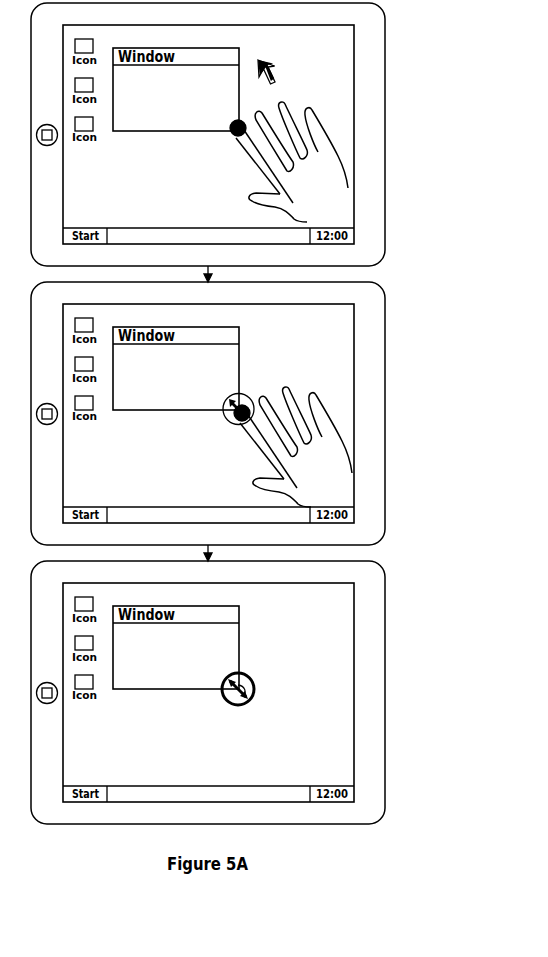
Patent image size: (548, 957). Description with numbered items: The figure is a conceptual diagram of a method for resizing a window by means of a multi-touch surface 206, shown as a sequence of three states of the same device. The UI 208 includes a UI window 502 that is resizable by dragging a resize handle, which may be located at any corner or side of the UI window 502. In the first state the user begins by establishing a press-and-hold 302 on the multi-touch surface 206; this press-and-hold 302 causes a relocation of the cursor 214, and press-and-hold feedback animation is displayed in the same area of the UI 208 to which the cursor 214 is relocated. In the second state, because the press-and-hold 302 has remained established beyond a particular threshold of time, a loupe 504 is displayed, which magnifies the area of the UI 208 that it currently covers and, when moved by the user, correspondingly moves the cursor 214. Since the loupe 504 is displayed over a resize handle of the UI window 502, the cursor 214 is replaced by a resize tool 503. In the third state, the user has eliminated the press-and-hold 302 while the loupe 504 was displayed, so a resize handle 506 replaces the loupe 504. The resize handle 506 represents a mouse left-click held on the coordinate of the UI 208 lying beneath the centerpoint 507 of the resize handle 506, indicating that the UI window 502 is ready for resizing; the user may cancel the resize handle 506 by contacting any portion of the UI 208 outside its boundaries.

The multi-touch surface 206 is at (354, 47).
The UI 208 is at (335, 103).
The cursor 214 is at (271, 69).
The press-and-hold 302 is at (236, 132).
The UI window 502 is at (157, 131).
The resize tool 503 is at (224, 411).
The loupe 504 is at (243, 394).
The resize handle 506 is at (243, 672).
The centerpoint 507 is at (255, 699).